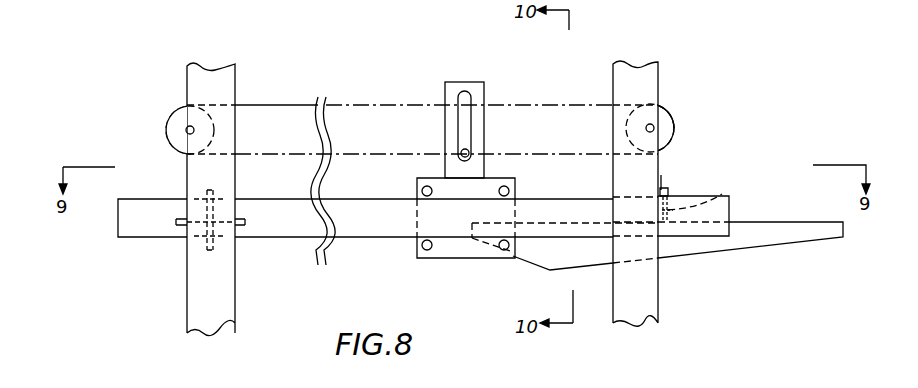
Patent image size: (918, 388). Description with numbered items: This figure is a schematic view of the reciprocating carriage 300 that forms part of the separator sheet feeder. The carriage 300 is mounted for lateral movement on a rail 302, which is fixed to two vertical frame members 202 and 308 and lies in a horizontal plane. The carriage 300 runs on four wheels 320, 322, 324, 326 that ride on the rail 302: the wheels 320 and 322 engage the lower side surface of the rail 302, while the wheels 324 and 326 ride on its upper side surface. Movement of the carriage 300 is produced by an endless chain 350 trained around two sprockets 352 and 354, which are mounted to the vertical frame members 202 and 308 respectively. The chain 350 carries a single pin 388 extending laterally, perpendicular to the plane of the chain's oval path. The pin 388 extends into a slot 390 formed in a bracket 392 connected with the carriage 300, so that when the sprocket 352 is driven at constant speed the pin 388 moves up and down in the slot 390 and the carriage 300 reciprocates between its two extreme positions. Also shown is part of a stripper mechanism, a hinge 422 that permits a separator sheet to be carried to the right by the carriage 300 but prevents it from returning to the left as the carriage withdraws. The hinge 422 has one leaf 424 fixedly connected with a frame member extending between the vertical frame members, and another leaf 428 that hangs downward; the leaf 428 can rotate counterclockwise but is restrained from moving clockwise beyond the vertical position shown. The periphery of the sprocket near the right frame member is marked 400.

The vertical frame member 202 is at (653, 302).
The reciprocating carriage 300 is at (848, 279).
The rail 302 is at (267, 230).
The vertical frame member 308 is at (212, 316).
The wheel 320 is at (508, 247).
The wheel 322 is at (416, 248).
The wheel 324 is at (512, 188).
The wheel 326 is at (419, 188).
The endless chain 350 is at (548, 105).
The sprocket 352 is at (672, 135).
The sprocket 354 is at (166, 132).
The pin 388 is at (470, 152).
The slot 390 is at (463, 132).
The bracket 392 is at (481, 93).
The pulley periphery 400 is at (667, 108).
The hinge 422 is at (692, 188).
The leaf 424 is at (663, 180).
The leaf 428 is at (726, 188).